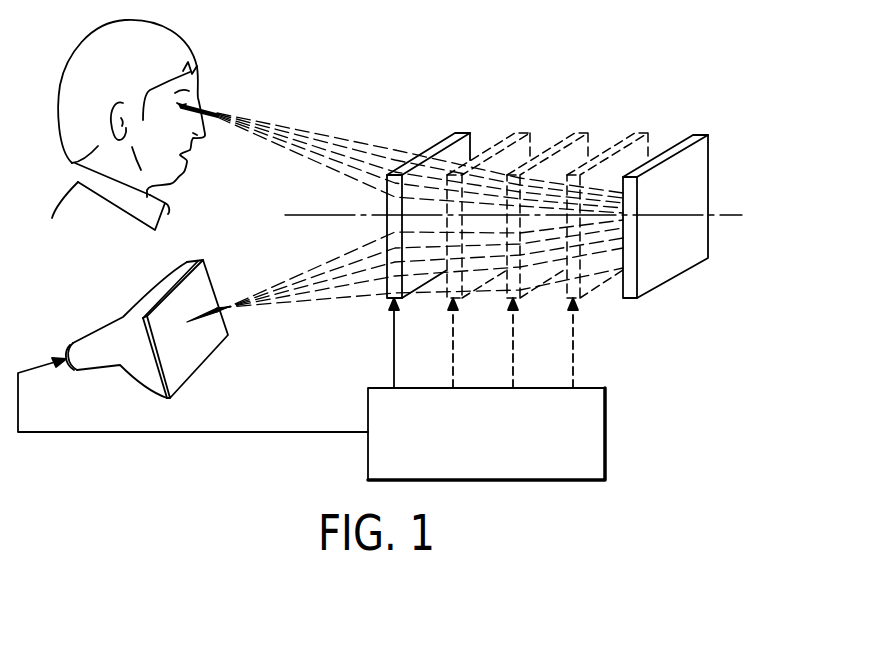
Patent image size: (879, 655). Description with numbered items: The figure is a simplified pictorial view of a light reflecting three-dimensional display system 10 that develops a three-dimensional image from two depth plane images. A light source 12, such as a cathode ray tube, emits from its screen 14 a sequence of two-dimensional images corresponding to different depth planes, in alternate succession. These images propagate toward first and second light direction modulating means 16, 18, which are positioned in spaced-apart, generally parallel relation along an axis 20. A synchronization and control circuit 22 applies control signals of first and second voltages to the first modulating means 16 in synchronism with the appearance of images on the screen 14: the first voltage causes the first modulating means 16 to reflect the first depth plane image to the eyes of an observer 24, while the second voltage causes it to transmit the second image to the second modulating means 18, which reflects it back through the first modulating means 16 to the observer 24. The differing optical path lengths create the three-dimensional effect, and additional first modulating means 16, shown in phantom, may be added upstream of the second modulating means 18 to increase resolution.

The display system 10 is at (208, 491).
The light source 12 is at (149, 329).
The screen 14 is at (178, 365).
The first light direction modulating means 16 is at (435, 146).
The second light direction modulating means 18 is at (702, 153).
The axis 20 is at (713, 210).
The synchronization and control circuit 22 is at (605, 432).
The observer 24 is at (182, 35).